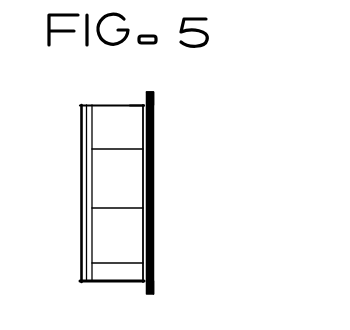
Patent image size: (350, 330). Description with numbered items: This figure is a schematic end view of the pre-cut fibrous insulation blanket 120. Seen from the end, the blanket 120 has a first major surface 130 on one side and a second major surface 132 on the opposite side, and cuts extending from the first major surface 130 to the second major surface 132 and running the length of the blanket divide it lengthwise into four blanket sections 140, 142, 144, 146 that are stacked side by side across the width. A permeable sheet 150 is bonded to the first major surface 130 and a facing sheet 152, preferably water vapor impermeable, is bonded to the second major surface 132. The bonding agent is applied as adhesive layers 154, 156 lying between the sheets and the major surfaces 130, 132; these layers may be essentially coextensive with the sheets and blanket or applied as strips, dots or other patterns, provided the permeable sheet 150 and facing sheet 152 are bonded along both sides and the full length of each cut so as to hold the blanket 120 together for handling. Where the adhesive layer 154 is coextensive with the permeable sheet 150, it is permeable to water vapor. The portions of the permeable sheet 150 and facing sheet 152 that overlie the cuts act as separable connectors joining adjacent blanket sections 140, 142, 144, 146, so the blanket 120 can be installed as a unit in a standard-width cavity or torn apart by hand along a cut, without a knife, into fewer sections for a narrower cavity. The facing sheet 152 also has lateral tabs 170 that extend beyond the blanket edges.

The pre-cut fibrous insulation blanket 120 is at (126, 193).
The first major surface 130 is at (72, 132).
The second major surface 132 is at (162, 237).
The blanket section 140 is at (112, 272).
The blanket section 142 is at (110, 235).
The blanket section 144 is at (103, 186).
The blanket section 146 is at (80, 116).
The permeable sheet 150 is at (72, 256).
The facing sheet 152 is at (165, 177).
The adhesive layer 154 is at (94, 168).
The adhesive layer 156 is at (143, 124).
The lateral tabs 170 is at (146, 97).